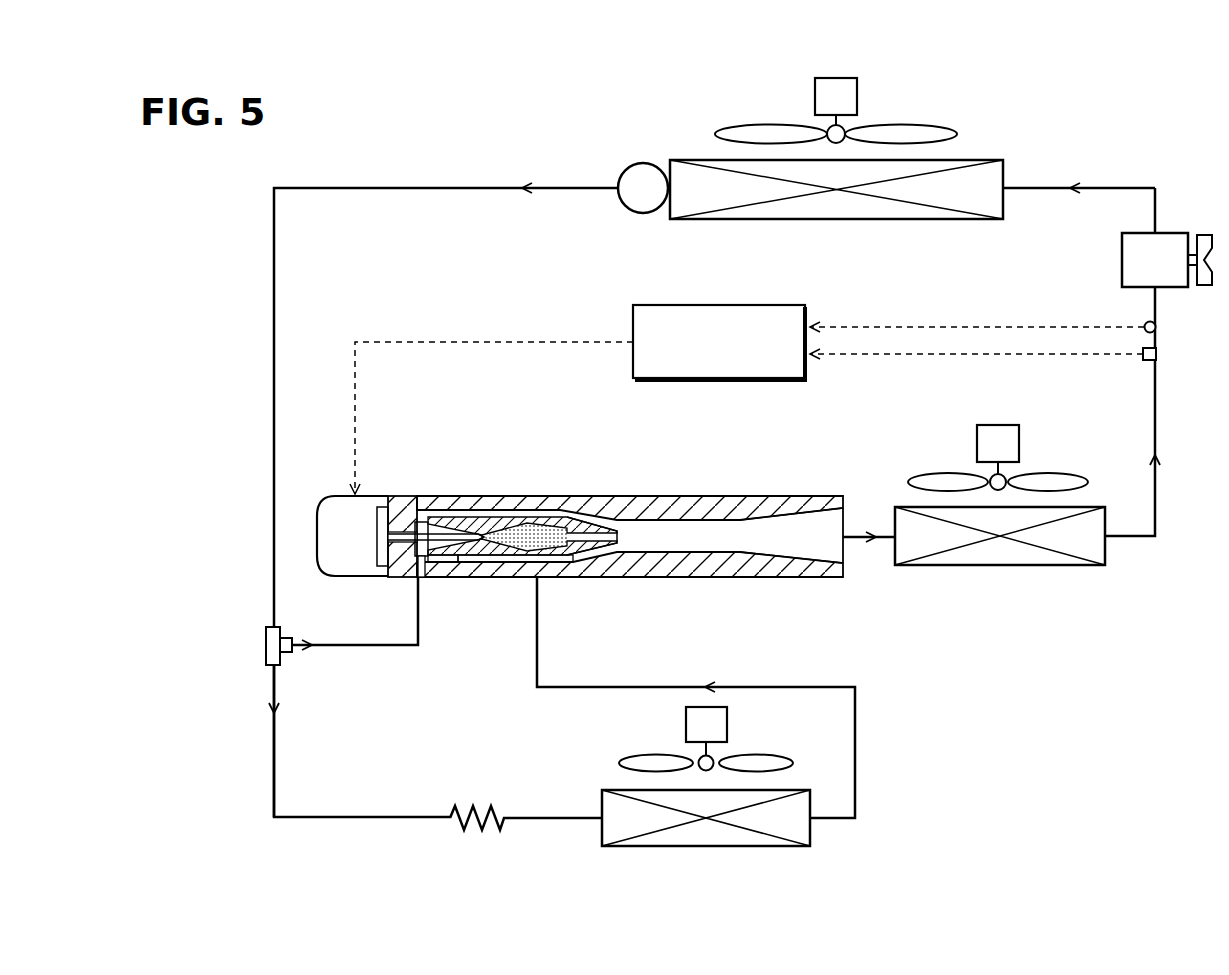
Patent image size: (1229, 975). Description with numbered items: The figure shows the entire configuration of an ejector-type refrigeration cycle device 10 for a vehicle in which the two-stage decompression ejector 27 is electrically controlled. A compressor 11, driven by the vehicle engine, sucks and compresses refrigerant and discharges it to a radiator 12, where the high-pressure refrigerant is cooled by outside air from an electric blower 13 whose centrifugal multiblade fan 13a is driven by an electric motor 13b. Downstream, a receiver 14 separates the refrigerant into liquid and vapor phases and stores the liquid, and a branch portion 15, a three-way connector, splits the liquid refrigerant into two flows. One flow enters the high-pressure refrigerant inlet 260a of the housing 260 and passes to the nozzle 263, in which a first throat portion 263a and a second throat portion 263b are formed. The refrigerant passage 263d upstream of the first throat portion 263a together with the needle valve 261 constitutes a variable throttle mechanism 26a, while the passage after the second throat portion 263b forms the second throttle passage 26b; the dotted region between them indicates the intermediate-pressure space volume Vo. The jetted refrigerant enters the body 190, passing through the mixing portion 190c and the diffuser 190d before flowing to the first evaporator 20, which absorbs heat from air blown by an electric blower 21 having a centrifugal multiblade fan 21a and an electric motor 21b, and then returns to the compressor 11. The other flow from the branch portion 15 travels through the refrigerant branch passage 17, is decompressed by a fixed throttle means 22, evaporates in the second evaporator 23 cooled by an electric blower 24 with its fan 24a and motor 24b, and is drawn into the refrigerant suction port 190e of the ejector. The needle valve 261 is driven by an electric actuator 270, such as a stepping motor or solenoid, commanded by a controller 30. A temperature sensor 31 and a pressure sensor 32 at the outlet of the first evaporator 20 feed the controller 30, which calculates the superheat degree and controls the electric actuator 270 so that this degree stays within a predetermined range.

The ejector-type refrigeration cycle device 10 is at (1115, 168).
The compressor 11 is at (1170, 233).
The radiator 12 is at (932, 220).
The electric blower 13 is at (857, 111).
The centrifugal multiblade fan 13a is at (950, 130).
The electric motor 13b is at (815, 108).
The receiver 14 is at (632, 165).
The branch portion 15 is at (262, 645).
The refrigerant branch passage 17 is at (270, 772).
The first evaporator 20 is at (1068, 568).
The electric blower 21 is at (978, 451).
The centrifugal multiblade fan 21a is at (935, 475).
The electric motor 21b is at (977, 440).
The throttle means 22 is at (450, 826).
The second evaporator 23 is at (812, 830).
The electric blower 24 is at (683, 739).
The centrifugal multiblade fan 24a is at (620, 763).
The electric motor 24b is at (686, 725).
The variable throttle mechanism 26a is at (463, 633).
The second throttle passage 26b is at (600, 517).
The two-stage decompression ejector 27 is at (610, 496).
The controller 30 is at (720, 305).
The temperature sensor 31 is at (1157, 327).
The pressure sensor 32 is at (1157, 354).
The body 190 is at (650, 527).
The mixing portion 190c is at (693, 530).
The diffuser 190d is at (780, 537).
The refrigerant suction port 190e is at (545, 578).
The housing 260 is at (400, 497).
The high-pressure refrigerant inlet 260a is at (410, 578).
The needle valve 261 is at (442, 578).
The nozzle 263 is at (502, 523).
The first throat portion 263a is at (460, 530).
The second throat portion 263b is at (566, 528).
The refrigerant passage 263d is at (473, 578).
The electric actuator 270 is at (318, 520).
The intermediate-pressure space volume Vo is at (511, 578).